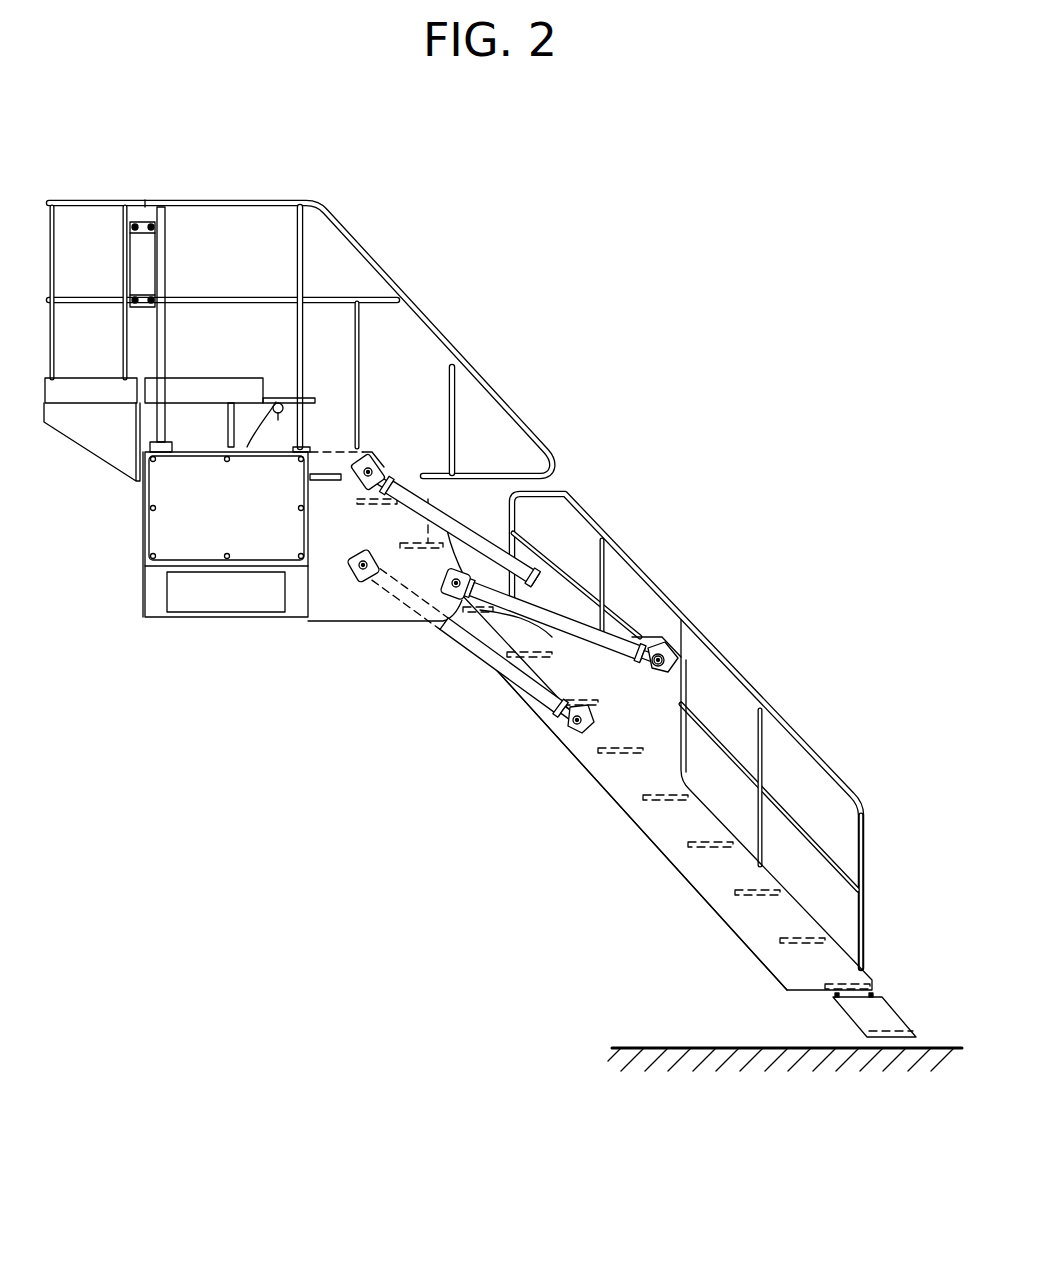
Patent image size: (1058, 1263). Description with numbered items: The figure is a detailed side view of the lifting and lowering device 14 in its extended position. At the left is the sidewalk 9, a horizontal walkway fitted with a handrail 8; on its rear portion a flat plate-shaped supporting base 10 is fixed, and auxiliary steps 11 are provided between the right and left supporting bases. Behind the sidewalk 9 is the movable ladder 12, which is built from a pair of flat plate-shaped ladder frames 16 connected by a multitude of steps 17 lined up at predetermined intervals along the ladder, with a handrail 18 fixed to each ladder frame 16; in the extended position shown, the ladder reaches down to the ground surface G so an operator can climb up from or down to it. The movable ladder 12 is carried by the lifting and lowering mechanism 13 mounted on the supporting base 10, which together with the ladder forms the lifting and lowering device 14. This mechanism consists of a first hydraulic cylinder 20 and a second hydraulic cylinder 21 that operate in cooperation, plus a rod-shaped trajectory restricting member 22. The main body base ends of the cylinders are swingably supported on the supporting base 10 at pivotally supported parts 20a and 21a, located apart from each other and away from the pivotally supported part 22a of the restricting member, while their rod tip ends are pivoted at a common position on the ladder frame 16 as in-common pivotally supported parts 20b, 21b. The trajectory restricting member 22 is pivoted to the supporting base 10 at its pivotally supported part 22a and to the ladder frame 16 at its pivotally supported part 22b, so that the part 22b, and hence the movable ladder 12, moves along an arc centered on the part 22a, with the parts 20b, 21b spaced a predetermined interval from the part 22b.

The handrail 8 is at (222, 200).
The sidewalk 9 is at (210, 448).
The supporting base 10 is at (320, 583).
The auxiliary steps 11 is at (428, 498).
The movable ladder 12 is at (672, 693).
The lifting and lowering mechanism 13 is at (453, 527).
The lifting and lowering device 14 is at (630, 362).
The ladder frame 16 is at (627, 798).
The steps 17 is at (757, 895).
The handrail 18 is at (818, 758).
The first hydraulic cylinder 20 is at (597, 637).
The pivotally supported part 20a is at (460, 593).
The in-common pivotally supported part 20b is at (657, 667).
The second hydraulic cylinder 21 is at (484, 530).
The pivotally supported part 21a is at (363, 483).
The in-common pivotally supported part 21b is at (600, 752).
The trajectory restricting member 22 is at (510, 672).
The pivotally supported part 22a is at (363, 575).
The pivotally supported part 22b is at (577, 727).
The ground surface G is at (940, 1046).